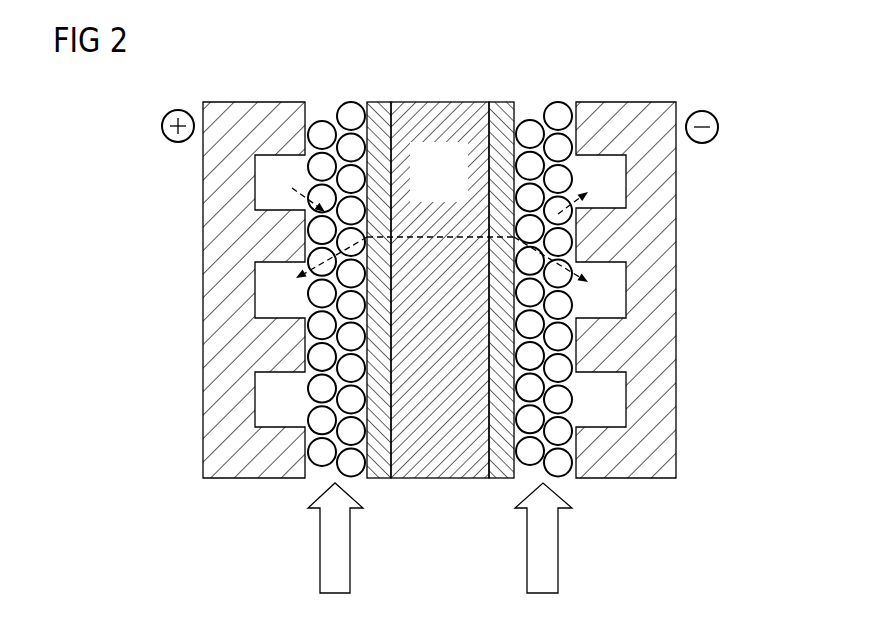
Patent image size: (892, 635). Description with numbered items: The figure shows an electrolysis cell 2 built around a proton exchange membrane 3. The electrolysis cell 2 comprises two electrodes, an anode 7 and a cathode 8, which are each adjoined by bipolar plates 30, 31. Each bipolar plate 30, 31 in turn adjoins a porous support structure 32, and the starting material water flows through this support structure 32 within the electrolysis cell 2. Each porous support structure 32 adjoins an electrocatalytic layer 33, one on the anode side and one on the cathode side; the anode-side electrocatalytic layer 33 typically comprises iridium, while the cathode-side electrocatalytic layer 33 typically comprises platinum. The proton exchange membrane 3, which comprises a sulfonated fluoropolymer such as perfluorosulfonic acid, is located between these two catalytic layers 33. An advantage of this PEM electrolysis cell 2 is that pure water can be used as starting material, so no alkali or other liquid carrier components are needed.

The electrolysis cell 2 is at (763, 287).
The proton exchange membrane 3 is at (440, 106).
The anode 7 is at (162, 126).
The cathode 8 is at (718, 127).
The bipolar plate 30 is at (252, 118).
The bipolar plate 31 is at (620, 118).
The porous support structure 32 is at (322, 120).
The electrocatalytic layer 33 is at (378, 104).